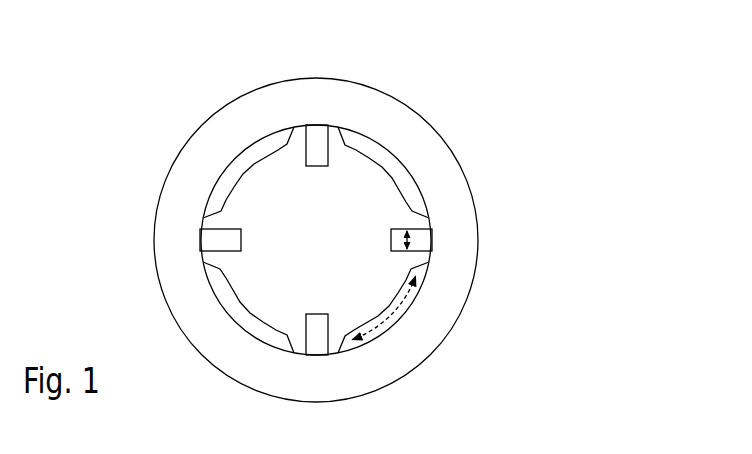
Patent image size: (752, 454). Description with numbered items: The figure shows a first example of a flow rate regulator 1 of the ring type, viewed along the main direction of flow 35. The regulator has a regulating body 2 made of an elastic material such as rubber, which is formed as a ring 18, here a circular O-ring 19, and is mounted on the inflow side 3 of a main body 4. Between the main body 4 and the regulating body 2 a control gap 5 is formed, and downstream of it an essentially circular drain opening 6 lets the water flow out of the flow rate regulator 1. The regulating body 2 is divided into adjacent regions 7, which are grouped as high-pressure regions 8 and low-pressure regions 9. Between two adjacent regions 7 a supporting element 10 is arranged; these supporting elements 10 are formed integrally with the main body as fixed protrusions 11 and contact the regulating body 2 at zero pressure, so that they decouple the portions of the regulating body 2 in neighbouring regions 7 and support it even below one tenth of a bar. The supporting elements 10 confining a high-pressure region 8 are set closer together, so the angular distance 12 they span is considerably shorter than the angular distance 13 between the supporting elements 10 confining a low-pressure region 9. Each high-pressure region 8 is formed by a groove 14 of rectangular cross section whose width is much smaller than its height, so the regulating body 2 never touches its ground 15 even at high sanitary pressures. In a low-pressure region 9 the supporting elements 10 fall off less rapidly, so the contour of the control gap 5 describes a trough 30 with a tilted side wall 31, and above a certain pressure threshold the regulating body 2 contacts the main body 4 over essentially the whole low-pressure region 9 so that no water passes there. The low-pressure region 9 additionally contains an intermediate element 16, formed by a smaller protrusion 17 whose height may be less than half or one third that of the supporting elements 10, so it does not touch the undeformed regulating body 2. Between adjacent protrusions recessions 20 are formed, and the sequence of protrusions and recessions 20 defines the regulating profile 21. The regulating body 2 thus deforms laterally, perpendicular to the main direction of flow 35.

The flow rate regulator 1 is at (551, 156).
The regulating body 2 is at (428, 340).
The inflow side 3 is at (357, 362).
The main body 4 is at (295, 262).
The control gap 5 is at (222, 183).
The drain opening 6 is at (263, 141).
The regions 7 is at (172, 241).
The high-pressure regions 8 is at (324, 100).
The low-pressure regions 9 is at (230, 116).
The supporting element 10 is at (322, 105).
The fixed protrusions 11 is at (292, 119).
The distance 12 is at (411, 241).
The distance 13 is at (386, 328).
The groove 14 is at (201, 245).
The ground 15 is at (232, 241).
The intermediate element 16 is at (233, 167).
The protrusion 17 is at (226, 311).
The ring 18 is at (169, 177).
The O-ring 19 is at (208, 353).
The recessions 20 is at (204, 302).
The regulating profile 21 is at (403, 193).
The trough 30 is at (411, 172).
The tilted side wall 31 is at (415, 207).
The main direction of flow 35 is at (222, 398).